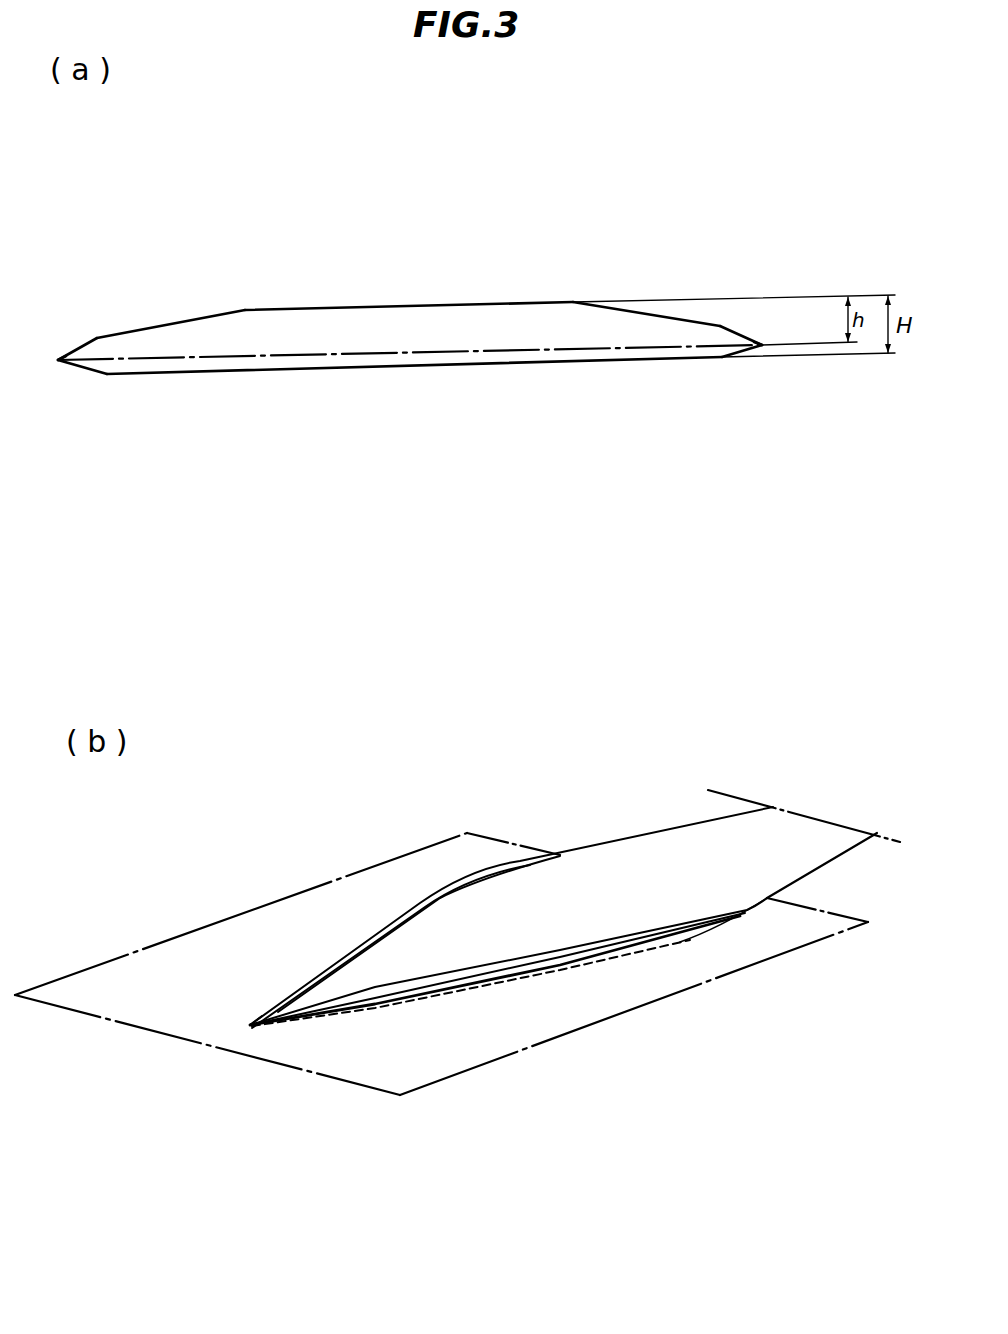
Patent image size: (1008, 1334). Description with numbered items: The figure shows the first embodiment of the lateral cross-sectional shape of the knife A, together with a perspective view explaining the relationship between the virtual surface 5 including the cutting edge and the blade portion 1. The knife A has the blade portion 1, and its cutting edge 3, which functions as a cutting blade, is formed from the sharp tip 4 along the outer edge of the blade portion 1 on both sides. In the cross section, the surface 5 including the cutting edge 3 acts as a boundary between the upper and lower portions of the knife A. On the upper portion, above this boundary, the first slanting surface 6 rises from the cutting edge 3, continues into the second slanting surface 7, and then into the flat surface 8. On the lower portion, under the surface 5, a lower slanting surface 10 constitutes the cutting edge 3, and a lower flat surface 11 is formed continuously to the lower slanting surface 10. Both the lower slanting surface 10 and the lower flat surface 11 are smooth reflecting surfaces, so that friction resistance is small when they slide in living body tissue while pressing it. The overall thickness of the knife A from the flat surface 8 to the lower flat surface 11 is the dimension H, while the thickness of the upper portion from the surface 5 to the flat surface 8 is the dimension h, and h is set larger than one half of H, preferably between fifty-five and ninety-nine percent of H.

The blade portion 1 is at (320, 292).
The cutting edge 3 is at (57, 358).
The tip 4 is at (248, 1027).
The surface including the cutting edge 5 is at (405, 352).
The first slanting surface 6 is at (77, 345).
The second slanting surface 7 is at (185, 325).
The flat surface 8 is at (475, 305).
The lower slanting surface 10 is at (80, 375).
The lower flat surface 11 is at (228, 375).
The knife A is at (567, 823).